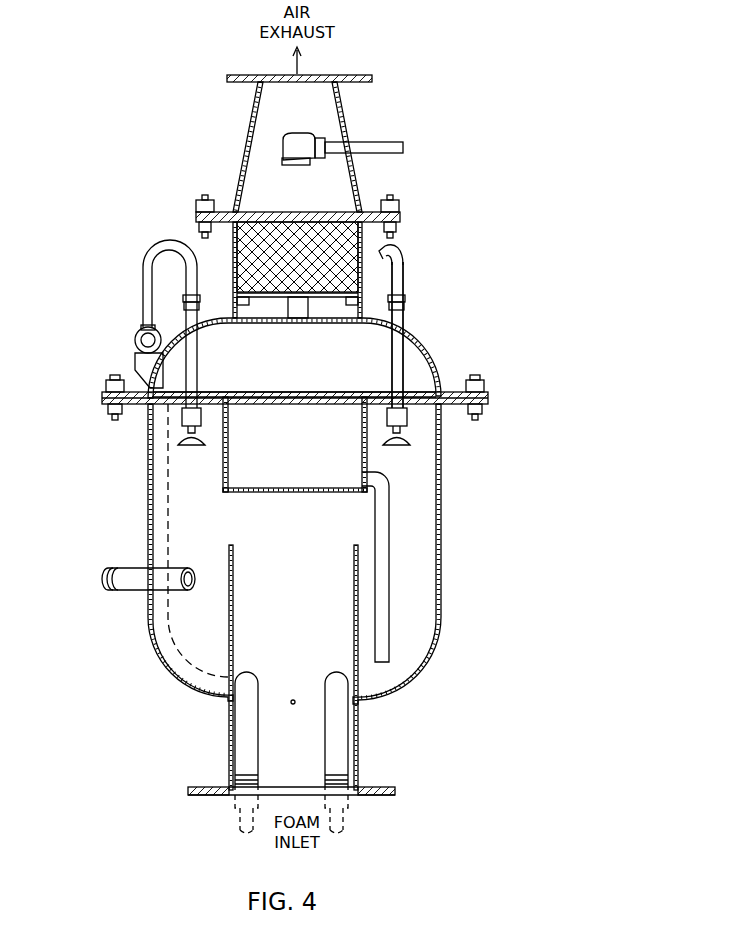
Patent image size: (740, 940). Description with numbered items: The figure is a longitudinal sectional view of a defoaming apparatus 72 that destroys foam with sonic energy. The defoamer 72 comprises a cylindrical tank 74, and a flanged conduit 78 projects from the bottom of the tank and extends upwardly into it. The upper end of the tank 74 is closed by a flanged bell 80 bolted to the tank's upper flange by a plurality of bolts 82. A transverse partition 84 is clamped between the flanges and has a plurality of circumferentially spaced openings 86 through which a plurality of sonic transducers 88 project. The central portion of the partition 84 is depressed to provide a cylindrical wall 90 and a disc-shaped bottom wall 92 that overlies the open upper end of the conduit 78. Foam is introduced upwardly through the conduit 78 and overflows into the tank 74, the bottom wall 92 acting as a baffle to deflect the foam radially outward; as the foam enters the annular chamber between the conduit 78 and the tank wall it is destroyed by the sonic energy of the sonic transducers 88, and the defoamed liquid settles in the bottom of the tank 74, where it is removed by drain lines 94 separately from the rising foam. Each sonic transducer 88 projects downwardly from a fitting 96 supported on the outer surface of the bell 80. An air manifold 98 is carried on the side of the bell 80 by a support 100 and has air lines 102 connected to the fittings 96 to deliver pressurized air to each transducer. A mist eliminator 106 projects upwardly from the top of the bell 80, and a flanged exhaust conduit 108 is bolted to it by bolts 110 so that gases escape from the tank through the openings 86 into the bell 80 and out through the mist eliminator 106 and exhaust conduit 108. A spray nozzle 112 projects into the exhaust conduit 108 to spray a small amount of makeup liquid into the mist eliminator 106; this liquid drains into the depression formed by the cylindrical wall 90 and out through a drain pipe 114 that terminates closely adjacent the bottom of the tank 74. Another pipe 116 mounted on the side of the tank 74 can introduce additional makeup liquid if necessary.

The defoaming apparatus 72 is at (447, 354).
The cylindrical tank 74 is at (443, 562).
The flanged conduit 78 is at (356, 756).
The flanged bell 80 is at (450, 390).
The bolts 82 is at (105, 385).
The transverse partition 84 is at (210, 393).
The openings 86 is at (205, 390).
The sonic transducers 88 is at (196, 446).
The cylindrical wall 90 is at (230, 426).
The disc-shaped bottom wall 92 is at (253, 490).
The drain lines 94 is at (260, 752).
The fittings 96 is at (200, 305).
The air manifold 98 is at (135, 335).
The support 100 is at (135, 360).
The air lines 102 is at (406, 264).
The mist eliminator 106 is at (205, 235).
The flanged exhaust conduit 108 is at (246, 118).
The bolts 110 is at (196, 200).
The spray nozzle 112 is at (290, 134).
The drain pipe 114 is at (395, 602).
The pipe 116 is at (124, 567).